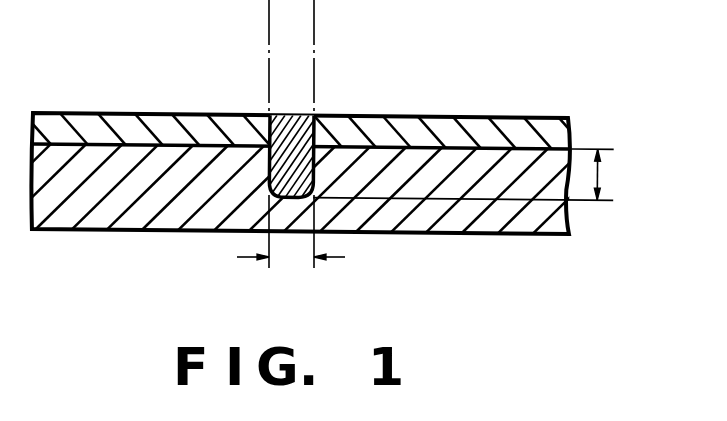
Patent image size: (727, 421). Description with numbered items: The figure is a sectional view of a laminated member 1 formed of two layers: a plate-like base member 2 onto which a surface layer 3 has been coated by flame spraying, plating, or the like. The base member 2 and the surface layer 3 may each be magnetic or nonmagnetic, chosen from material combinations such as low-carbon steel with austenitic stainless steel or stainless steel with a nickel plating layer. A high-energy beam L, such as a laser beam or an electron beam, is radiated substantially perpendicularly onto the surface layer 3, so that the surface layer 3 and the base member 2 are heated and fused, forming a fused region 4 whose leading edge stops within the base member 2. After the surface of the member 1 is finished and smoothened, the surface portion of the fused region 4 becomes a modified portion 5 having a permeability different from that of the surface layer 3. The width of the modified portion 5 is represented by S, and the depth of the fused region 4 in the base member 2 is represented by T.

The member 1 is at (506, 103).
The base member 2 is at (113, 218).
The surface layer 3 is at (91, 128).
The fused region 4 is at (319, 124).
The modified portion 5 is at (292, 113).
The high-energy beam L is at (318, 7).
The width of the modified portion S is at (291, 234).
The depth of the fused region T is at (467, 174).